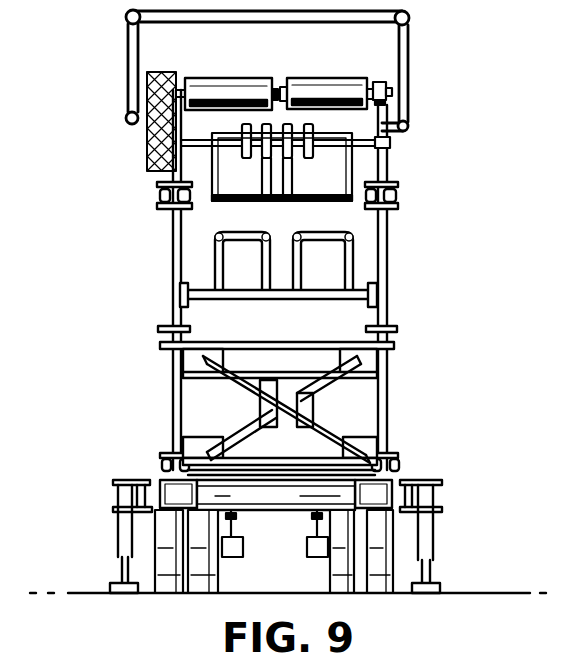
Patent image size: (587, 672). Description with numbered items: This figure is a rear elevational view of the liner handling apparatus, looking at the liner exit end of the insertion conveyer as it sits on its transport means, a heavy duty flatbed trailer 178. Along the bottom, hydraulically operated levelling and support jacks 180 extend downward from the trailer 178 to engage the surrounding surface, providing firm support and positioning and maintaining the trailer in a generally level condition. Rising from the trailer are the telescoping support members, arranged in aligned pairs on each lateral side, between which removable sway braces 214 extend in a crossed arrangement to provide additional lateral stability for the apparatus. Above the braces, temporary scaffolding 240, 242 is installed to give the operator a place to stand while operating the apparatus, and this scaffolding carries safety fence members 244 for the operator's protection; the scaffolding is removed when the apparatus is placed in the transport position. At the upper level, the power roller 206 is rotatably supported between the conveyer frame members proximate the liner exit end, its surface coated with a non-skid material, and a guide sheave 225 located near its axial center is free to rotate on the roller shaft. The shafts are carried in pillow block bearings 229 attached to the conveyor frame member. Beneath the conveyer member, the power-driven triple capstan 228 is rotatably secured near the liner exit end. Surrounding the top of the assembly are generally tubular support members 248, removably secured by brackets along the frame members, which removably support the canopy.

The power roller 206 is at (246, 87).
The guide sheave 225 is at (293, 82).
The pillow block bearings 229 is at (379, 82).
The tubular support members 248 is at (408, 48).
The triple capstan 228 is at (308, 130).
The temporary scaffolding 240 is at (303, 196).
The safety fence members 244 is at (350, 238).
The temporary scaffolding 242 is at (354, 290).
The sway braces 214 is at (323, 397).
The flatbed trailer 178 is at (160, 482).
The levelling and support jacks 180 is at (120, 540).